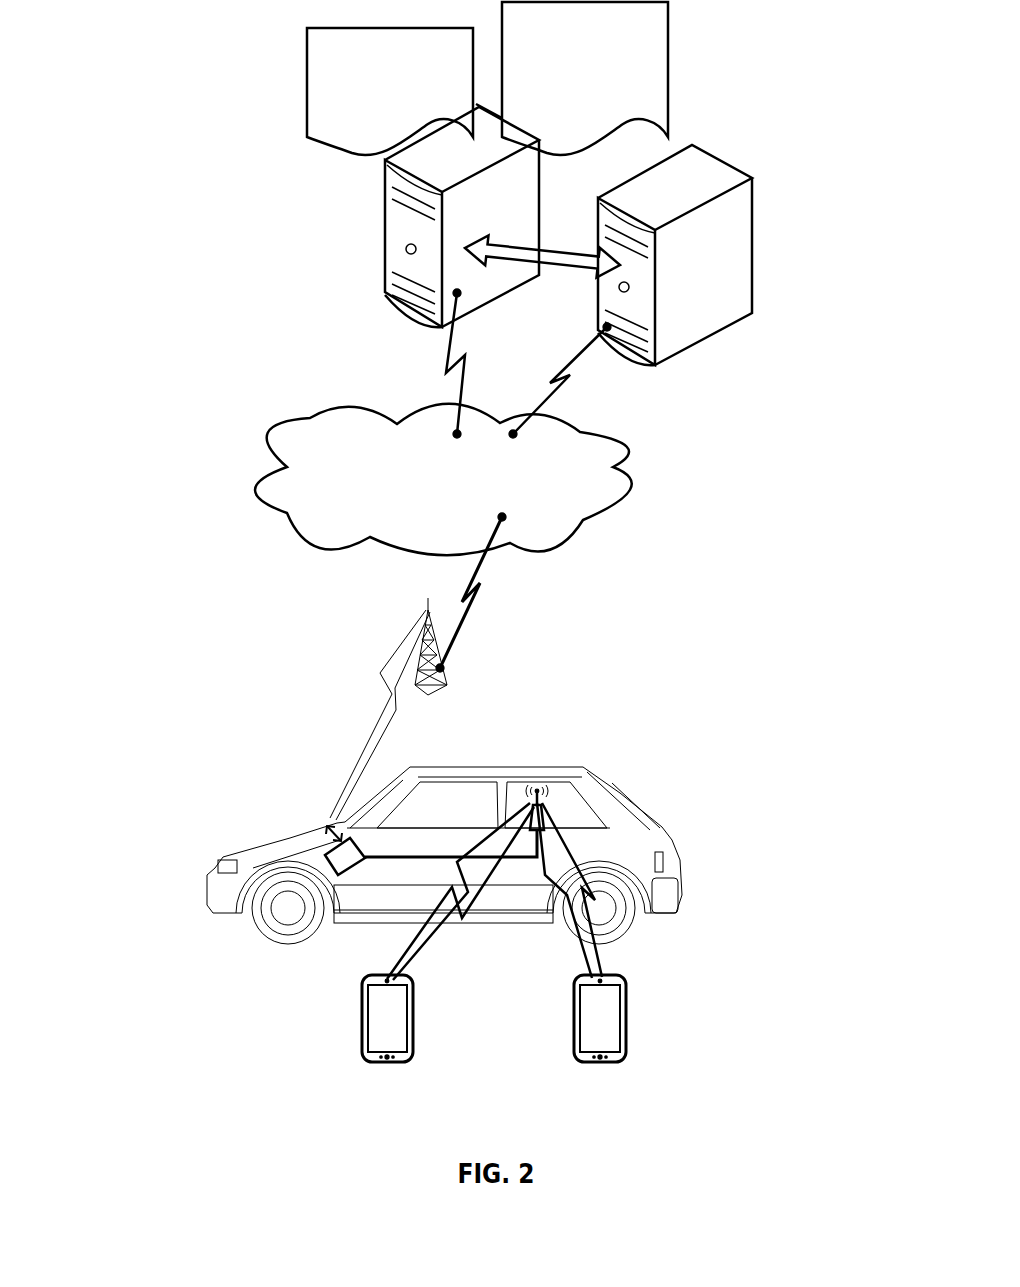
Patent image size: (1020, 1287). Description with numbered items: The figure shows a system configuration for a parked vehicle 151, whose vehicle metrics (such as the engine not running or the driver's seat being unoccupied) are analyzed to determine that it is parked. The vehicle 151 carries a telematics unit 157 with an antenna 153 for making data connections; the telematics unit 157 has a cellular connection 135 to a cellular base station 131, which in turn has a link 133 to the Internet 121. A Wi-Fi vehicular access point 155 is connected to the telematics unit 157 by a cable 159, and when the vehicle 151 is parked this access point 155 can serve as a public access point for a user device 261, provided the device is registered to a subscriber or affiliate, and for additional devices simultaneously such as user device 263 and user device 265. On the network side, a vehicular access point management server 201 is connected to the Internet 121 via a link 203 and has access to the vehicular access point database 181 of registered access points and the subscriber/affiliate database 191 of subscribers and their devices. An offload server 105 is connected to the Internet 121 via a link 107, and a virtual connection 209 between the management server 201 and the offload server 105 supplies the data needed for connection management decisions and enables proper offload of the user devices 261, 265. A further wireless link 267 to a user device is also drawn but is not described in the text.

The vehicular access point database 181 is at (355, 70).
The subscriber/affiliate database 191 is at (548, 43).
The vehicular access point management server 201 is at (395, 230).
The virtual connection 209 is at (556, 267).
The offload server 105 is at (737, 245).
The link 203 is at (455, 396).
The link 107 is at (583, 353).
The Internet 121 is at (425, 491).
The link 133 is at (485, 553).
The cellular base station 131 is at (428, 695).
The connection 135 is at (388, 692).
The antenna 153 is at (340, 788).
The vehicle 151 is at (590, 773).
The Wi-Fi vehicular access point 155 is at (543, 822).
The telematics unit 157 is at (338, 876).
The cable 159 is at (392, 858).
The user device 263 is at (457, 888).
The Wi-Fi link to user device 267 is at (570, 893).
The user device 261 is at (413, 1020).
The user device 265 is at (627, 1020).